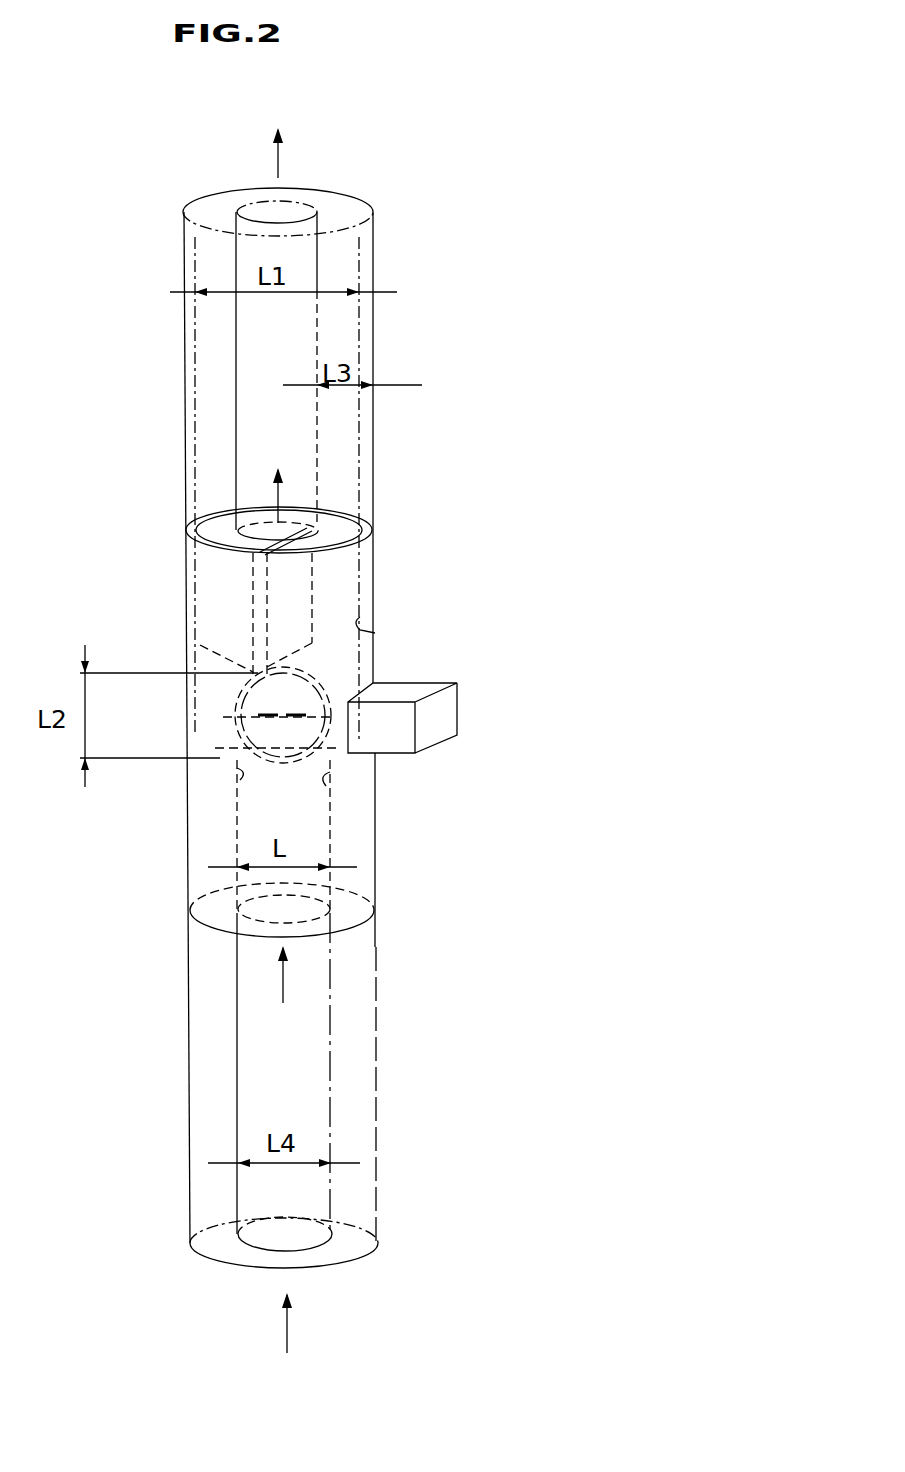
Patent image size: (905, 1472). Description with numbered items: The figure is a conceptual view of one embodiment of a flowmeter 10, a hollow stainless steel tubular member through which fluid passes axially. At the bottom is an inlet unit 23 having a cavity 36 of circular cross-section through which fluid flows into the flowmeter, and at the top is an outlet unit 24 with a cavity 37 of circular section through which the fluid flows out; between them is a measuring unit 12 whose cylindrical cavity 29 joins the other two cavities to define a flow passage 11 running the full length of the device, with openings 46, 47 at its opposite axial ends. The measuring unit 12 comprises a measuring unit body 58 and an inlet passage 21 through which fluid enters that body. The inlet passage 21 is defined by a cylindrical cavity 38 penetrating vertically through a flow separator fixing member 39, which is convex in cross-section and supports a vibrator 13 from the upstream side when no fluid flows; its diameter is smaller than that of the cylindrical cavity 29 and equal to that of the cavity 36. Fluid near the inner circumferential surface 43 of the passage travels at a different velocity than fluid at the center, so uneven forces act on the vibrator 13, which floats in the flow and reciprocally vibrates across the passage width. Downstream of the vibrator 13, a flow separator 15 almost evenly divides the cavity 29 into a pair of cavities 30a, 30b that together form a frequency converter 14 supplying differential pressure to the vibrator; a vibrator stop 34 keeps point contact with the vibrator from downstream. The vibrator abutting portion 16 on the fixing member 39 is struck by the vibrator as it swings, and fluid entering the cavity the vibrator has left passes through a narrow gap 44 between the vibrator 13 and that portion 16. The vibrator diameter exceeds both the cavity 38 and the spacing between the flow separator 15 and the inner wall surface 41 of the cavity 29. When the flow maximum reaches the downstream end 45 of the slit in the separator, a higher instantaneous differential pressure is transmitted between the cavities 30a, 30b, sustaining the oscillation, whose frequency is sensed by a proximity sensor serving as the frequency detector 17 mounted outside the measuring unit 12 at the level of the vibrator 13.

The flowmeter 10 is at (495, 195).
The flow passage 11 is at (228, 1272).
The measuring unit 12 is at (568, 640).
The vibrator 13 is at (373, 661).
The frequency converter 14 is at (417, 518).
The flow separator 15 is at (320, 575).
The vibrator abutting portion 16 is at (247, 777).
The frequency detector 17 is at (457, 700).
The inlet passage 21 is at (220, 807).
The inlet unit 23 is at (162, 1098).
The outlet unit 24 is at (133, 378).
The cylindrical cavity 29 is at (225, 535).
The cavity 30a is at (210, 573).
The cavity 30b is at (345, 602).
The vibrator stop 34 is at (200, 645).
The cavity 36 is at (362, 1012).
The cavity 37 is at (367, 337).
The cylindrical cavity 38 is at (247, 842).
The flow separator fixing member 39 is at (367, 890).
The inner wall surface 41 is at (375, 633).
The inner circumferential surface 43 is at (193, 903).
The narrow gap 44 is at (223, 720).
The downstream end 45 is at (310, 532).
The opening 46 is at (315, 1262).
The opening 47 is at (303, 207).
The measuring unit body 58 is at (147, 597).